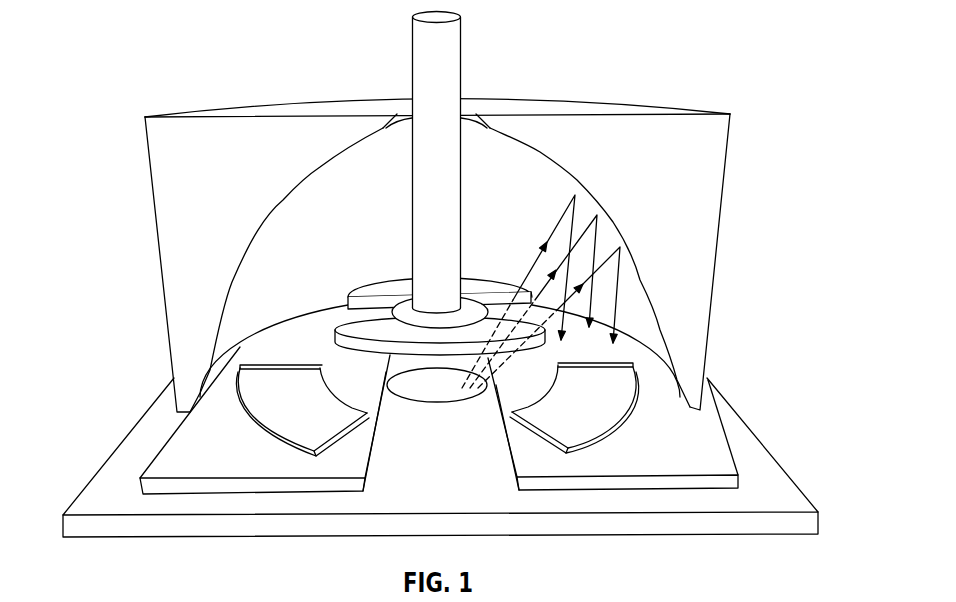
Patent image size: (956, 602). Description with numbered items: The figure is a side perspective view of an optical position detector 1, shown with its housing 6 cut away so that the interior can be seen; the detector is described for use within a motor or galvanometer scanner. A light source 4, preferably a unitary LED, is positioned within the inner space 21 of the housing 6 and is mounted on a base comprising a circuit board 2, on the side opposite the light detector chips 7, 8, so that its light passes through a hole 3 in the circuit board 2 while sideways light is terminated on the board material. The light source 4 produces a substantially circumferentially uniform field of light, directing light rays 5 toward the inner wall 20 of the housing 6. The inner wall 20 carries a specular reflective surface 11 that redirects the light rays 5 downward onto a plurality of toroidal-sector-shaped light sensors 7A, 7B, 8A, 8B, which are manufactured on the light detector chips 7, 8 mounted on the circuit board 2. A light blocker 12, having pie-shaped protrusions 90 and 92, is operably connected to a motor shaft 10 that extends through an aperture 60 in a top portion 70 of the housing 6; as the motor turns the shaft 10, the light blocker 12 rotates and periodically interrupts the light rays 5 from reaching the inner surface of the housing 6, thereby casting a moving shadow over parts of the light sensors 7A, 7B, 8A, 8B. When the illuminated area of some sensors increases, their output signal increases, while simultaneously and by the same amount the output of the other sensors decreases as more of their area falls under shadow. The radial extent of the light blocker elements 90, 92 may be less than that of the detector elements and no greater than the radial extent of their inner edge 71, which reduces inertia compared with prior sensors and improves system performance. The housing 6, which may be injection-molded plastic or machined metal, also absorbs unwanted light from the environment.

The position detector 1 is at (135, 72).
The circuit board 2 is at (116, 509).
The hole 3 is at (381, 378).
The light source 4 is at (441, 397).
The light rays 5 is at (565, 212).
The housing 6 is at (437, 232).
The light detector chip 7 is at (613, 411).
The light sensor 7A is at (593, 361).
The light sensor 7B is at (582, 432).
The light detector chip 8 is at (265, 413).
The light sensor 8A is at (313, 433).
The light sensor 8B is at (310, 363).
The motor shaft 10 is at (449, 68).
The specular reflective surface 11 is at (613, 222).
The light blocker 12 is at (434, 285).
The inner wall 20 is at (440, 270).
The inner space 21 is at (440, 270).
The aperture 60 is at (473, 115).
The top portion 70 is at (375, 113).
The inner edge 71 is at (532, 402).
The pie-shaped protrusion 90 is at (478, 290).
The pie-shaped protrusion 92 is at (401, 348).